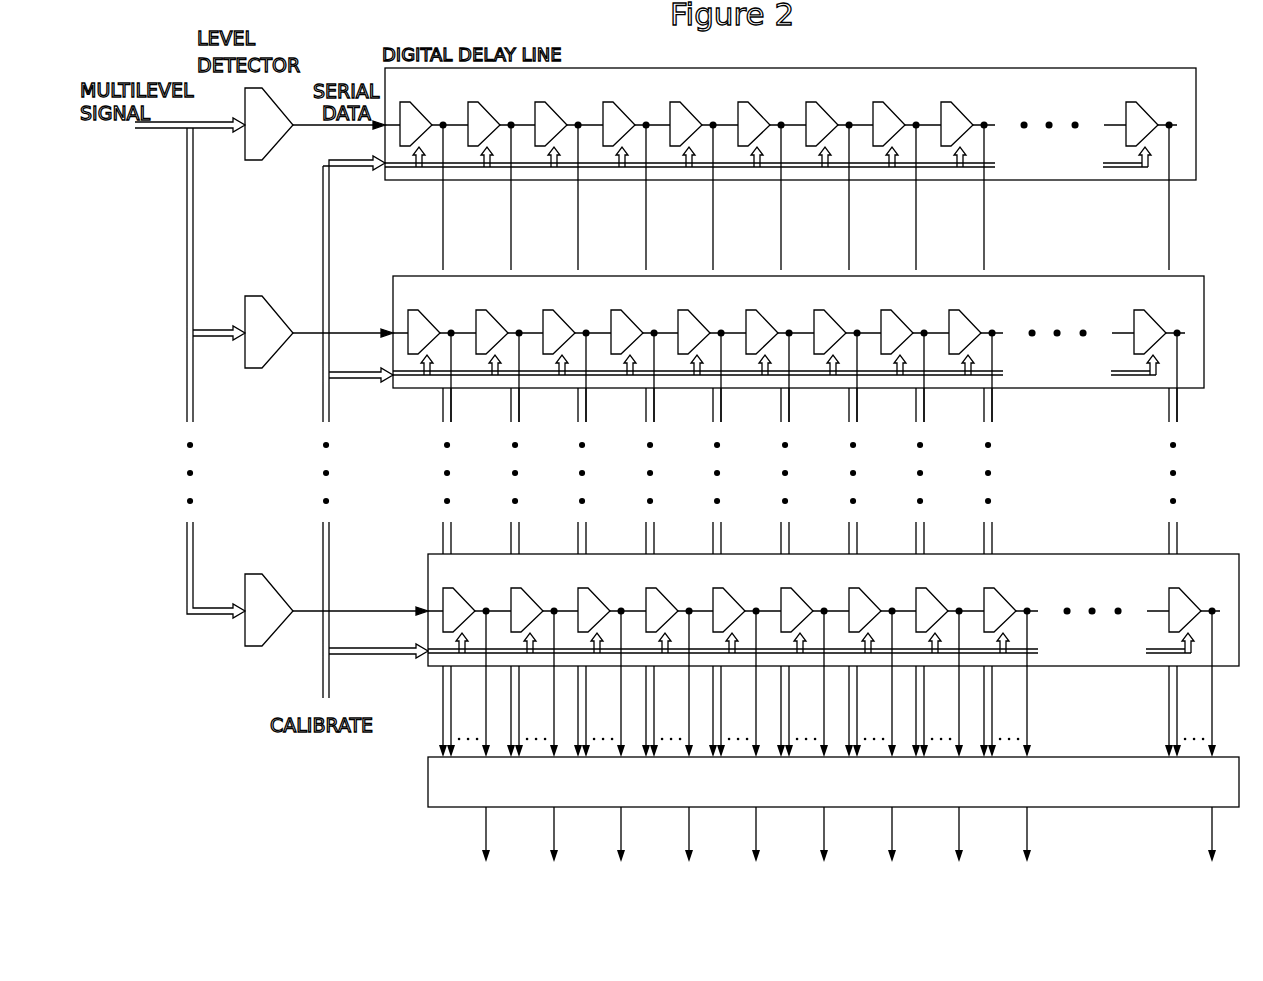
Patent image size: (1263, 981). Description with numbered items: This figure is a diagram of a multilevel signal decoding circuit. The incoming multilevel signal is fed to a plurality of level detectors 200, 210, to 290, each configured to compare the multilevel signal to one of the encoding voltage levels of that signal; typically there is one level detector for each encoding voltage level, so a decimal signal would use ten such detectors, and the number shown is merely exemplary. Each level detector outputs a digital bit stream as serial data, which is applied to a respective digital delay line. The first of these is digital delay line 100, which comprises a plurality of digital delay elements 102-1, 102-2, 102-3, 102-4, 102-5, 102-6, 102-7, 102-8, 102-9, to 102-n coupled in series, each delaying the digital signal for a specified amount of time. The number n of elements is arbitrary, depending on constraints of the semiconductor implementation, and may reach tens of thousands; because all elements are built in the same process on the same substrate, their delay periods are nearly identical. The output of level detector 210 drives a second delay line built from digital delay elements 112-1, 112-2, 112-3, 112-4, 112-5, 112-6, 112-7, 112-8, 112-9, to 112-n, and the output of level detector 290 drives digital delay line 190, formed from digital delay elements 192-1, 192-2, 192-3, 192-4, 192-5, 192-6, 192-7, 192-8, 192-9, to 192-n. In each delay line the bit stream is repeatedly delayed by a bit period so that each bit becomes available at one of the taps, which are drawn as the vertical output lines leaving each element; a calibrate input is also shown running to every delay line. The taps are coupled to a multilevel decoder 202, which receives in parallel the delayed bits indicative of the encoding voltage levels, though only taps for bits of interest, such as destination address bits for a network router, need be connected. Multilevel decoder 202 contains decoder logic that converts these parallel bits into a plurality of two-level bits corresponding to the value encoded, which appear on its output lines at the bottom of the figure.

The digital delay line 100 is at (790, 155).
The digital delay element 102-1 is at (430, 114).
The digital delay element 102-2 is at (498, 114).
The digital delay element 102-3 is at (565, 114).
The digital delay element 102-4 is at (633, 114).
The digital delay element 102-5 is at (700, 114).
The digital delay element 102-6 is at (768, 114).
The digital delay element 102-7 is at (836, 114).
The digital delay element 102-8 is at (903, 114).
The digital delay element 102-9 is at (971, 114).
The digital delay element 102-n is at (1156, 114).
The digital delay element 112-1 is at (438, 322).
The digital delay element 112-2 is at (506, 322).
The digital delay element 112-3 is at (573, 322).
The digital delay element 112-4 is at (641, 322).
The digital delay element 112-5 is at (708, 322).
The digital delay element 112-6 is at (776, 322).
The digital delay element 112-7 is at (844, 322).
The digital delay element 112-8 is at (911, 322).
The digital delay element 112-9 is at (979, 322).
The digital delay element 112-n is at (1164, 322).
The digital delay element 192-1 is at (473, 600).
The digital delay element 192-2 is at (541, 600).
The digital delay element 192-3 is at (608, 600).
The digital delay element 192-4 is at (676, 600).
The digital delay element 192-5 is at (743, 600).
The digital delay element 192-6 is at (811, 600).
The digital delay element 192-7 is at (879, 600).
The digital delay element 192-8 is at (946, 600).
The digital delay element 192-9 is at (1014, 600).
The digital delay element 192-n is at (1199, 600).
The digital delay line 190 is at (833, 638).
The level detector 200 is at (277, 122).
The level detector 210 is at (726, 311).
The level detector 290 is at (279, 607).
The multilevel decoder 202 is at (839, 772).